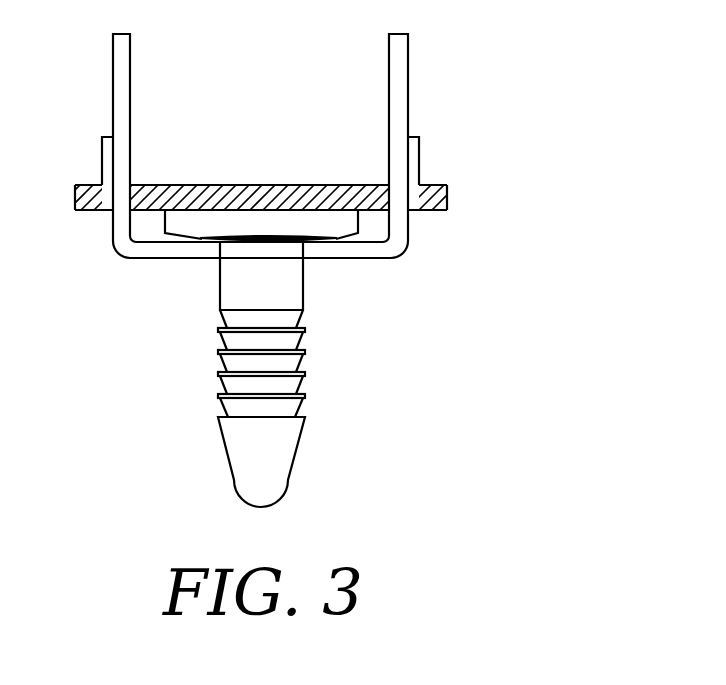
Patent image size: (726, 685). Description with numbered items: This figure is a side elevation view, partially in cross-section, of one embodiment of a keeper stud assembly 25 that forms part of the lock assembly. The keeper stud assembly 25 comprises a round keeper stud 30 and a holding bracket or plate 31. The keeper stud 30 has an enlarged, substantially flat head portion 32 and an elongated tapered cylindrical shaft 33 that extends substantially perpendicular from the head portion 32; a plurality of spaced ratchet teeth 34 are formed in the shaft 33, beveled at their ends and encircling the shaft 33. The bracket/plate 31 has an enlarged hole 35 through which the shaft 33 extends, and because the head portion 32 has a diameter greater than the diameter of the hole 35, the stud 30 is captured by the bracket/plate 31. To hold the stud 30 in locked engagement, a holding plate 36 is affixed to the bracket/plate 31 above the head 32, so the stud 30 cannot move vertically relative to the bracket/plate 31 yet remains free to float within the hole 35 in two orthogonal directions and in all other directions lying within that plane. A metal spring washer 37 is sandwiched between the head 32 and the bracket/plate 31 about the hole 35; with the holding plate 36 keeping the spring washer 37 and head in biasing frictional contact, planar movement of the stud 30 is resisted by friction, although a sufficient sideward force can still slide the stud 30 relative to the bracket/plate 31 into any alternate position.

The keeper stud assembly 25 is at (463, 223).
The keeper stud 30 is at (233, 285).
The holding bracket or plate 31 is at (408, 75).
The head portion 32 is at (208, 222).
The tapered cylindrical shaft 33 is at (273, 285).
The ratchet teeth 34 is at (303, 374).
The hole 35 is at (150, 253).
The holding plate 36 is at (304, 194).
The spring washer 37 is at (341, 241).